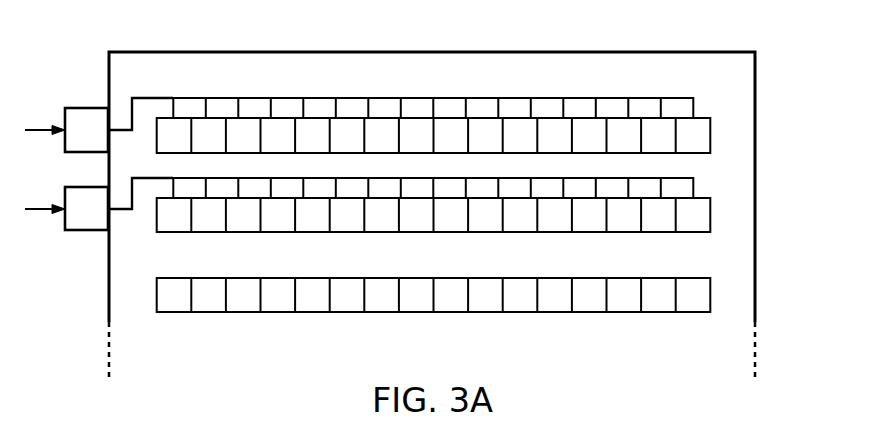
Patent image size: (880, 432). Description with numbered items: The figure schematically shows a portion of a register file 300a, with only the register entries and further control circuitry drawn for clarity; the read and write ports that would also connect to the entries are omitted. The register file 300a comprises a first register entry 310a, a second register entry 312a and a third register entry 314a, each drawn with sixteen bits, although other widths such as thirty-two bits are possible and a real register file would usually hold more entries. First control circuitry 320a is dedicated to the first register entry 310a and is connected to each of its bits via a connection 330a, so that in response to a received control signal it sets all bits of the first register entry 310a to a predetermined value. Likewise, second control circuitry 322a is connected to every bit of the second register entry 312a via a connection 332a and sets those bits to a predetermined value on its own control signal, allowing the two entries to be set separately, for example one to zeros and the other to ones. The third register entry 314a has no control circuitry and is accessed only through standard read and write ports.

The register file 300a is at (755, 115).
The first register entry 310a is at (693, 155).
The second register entry 312a is at (693, 234).
The third register entry 314a is at (693, 313).
The first control circuitry 320a is at (88, 108).
The second control circuitry 322a is at (82, 232).
The connection 330a is at (270, 98).
The connection 332a is at (123, 210).